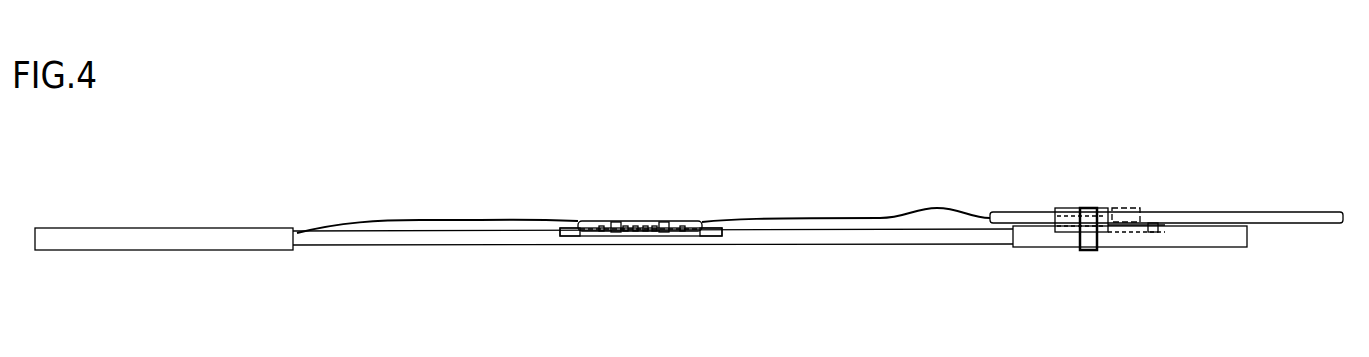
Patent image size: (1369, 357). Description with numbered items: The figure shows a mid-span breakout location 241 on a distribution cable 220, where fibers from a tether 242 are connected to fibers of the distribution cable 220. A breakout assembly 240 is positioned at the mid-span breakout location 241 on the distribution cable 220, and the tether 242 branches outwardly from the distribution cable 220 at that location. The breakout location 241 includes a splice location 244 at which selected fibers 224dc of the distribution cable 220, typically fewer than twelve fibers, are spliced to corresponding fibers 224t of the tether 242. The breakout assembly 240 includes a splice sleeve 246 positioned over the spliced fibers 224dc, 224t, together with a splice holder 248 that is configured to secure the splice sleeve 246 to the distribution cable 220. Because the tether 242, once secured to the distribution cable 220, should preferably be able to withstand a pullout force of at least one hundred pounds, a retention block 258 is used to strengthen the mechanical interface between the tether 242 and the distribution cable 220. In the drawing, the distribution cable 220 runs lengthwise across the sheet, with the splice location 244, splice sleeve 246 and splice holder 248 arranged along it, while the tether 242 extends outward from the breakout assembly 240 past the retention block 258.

The distribution cable 220 is at (190, 241).
The mid-span breakout location 241 is at (387, 196).
The fibers of the distribution cable 224dc is at (433, 221).
The splice location 244 is at (643, 218).
The splice sleeve 246 is at (567, 231).
The splice holder 248 is at (673, 229).
The fibers of the tether 224t is at (888, 218).
The tether 242 is at (1256, 219).
The retention block 258 is at (1082, 208).
The breakout assembly 240 is at (1166, 130).